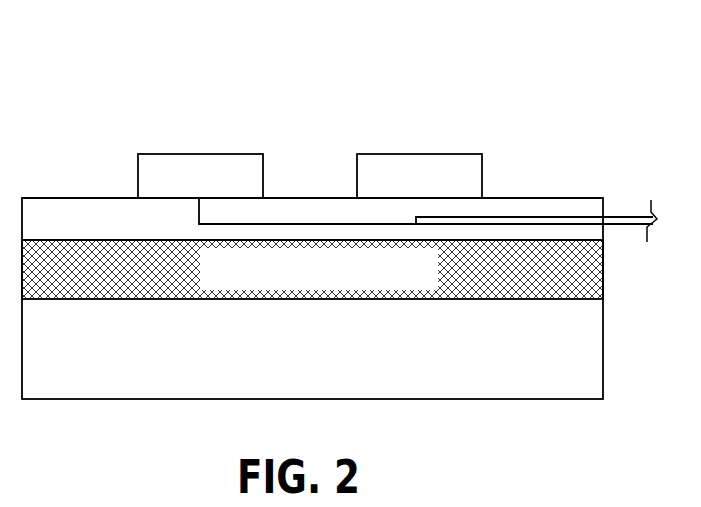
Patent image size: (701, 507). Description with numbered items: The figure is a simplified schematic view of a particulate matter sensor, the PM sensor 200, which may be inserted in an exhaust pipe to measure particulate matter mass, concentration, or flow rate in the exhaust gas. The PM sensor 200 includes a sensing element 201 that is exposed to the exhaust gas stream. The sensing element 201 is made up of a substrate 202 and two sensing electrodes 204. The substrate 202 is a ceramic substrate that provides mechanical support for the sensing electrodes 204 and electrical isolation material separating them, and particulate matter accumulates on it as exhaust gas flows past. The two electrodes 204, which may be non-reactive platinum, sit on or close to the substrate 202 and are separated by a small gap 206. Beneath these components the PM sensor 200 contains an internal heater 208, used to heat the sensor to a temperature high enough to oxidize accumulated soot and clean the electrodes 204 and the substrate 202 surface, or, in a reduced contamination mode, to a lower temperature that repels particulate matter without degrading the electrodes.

The PM sensor 200 is at (215, 62).
The sensing element 201 is at (128, 178).
The substrate 202 is at (100, 227).
The sensing electrodes 204 is at (215, 187).
The gap 206 is at (357, 148).
The internal heater 208 is at (417, 279).